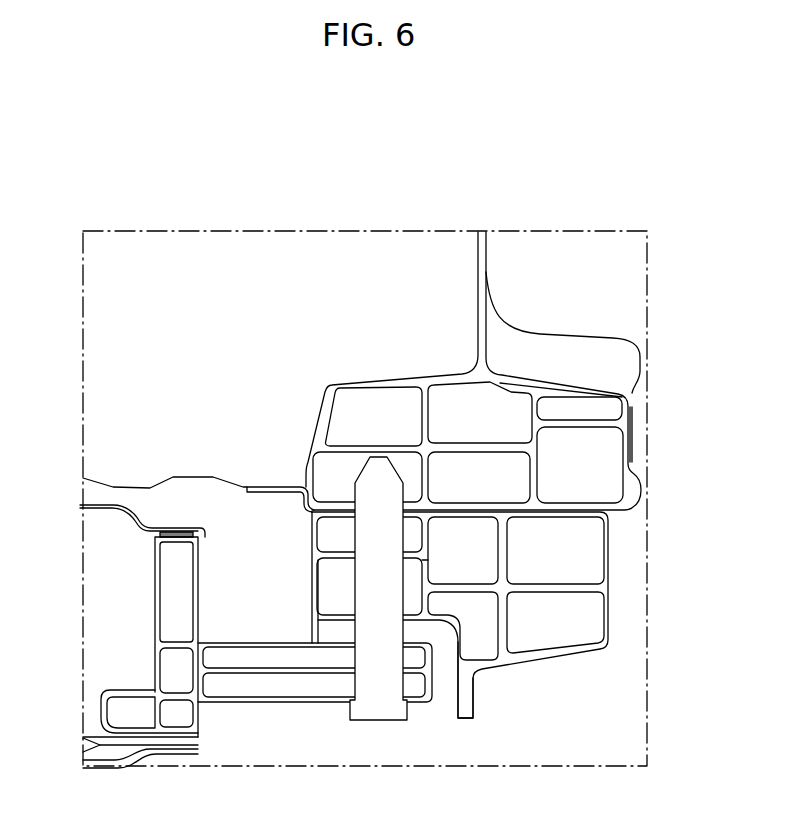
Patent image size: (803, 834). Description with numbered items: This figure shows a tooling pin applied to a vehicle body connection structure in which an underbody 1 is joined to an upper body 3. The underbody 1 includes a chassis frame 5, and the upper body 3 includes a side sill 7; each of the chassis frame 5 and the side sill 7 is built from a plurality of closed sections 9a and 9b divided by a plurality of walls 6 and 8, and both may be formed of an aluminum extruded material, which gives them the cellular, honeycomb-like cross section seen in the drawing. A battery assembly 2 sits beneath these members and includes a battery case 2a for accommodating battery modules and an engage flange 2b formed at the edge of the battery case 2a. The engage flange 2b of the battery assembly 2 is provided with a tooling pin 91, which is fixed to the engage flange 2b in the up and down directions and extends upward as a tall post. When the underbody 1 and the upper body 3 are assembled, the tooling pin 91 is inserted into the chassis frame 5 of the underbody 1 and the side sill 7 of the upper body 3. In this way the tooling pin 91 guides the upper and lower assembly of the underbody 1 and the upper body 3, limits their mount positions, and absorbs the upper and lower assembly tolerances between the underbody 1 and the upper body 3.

The underbody 1 is at (624, 572).
The battery assembly 2 is at (140, 582).
The battery case 2a is at (102, 712).
The engage flange 2b is at (247, 665).
The upper body 3 is at (648, 436).
The chassis frame 5 is at (516, 758).
The walls 6 is at (402, 556).
The side sill 7 is at (434, 300).
The walls 8 is at (335, 490).
The closed sections 9a is at (458, 566).
The closed sections 9b is at (454, 398).
The tooling pin 91 is at (372, 718).